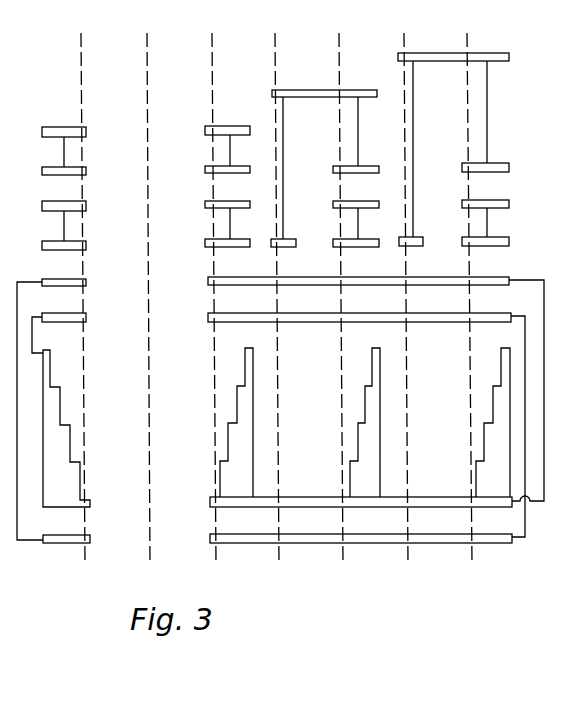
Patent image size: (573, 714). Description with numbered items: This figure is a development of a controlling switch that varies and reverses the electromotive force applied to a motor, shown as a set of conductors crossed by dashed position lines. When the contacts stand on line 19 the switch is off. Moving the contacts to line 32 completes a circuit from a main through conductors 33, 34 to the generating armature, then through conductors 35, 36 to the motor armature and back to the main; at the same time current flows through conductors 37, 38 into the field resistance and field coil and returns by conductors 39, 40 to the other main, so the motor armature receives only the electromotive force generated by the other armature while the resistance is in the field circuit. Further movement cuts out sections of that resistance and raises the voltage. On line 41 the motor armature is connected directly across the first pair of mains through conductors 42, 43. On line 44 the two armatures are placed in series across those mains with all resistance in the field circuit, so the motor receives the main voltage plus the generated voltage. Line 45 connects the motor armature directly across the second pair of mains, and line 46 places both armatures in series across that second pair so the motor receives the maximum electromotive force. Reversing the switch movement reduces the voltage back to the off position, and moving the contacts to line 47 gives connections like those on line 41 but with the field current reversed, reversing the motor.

The line 19 is at (160, 297).
The line 47 is at (94, 297).
The line 32 is at (224, 297).
The line 41 is at (288, 297).
The line 44 is at (352, 296).
The line 45 is at (414, 296).
The line 46 is at (485, 296).
The conductor 33 is at (240, 133).
The conductor 34 is at (240, 171).
The conductor 35 is at (247, 205).
The conductor 36 is at (244, 243).
The conductor 42 is at (309, 96).
The conductor 43 is at (294, 241).
The conductor 37 is at (246, 278).
The conductor 40 is at (333, 319).
The conductor 38 is at (370, 498).
The conductor 39 is at (376, 541).